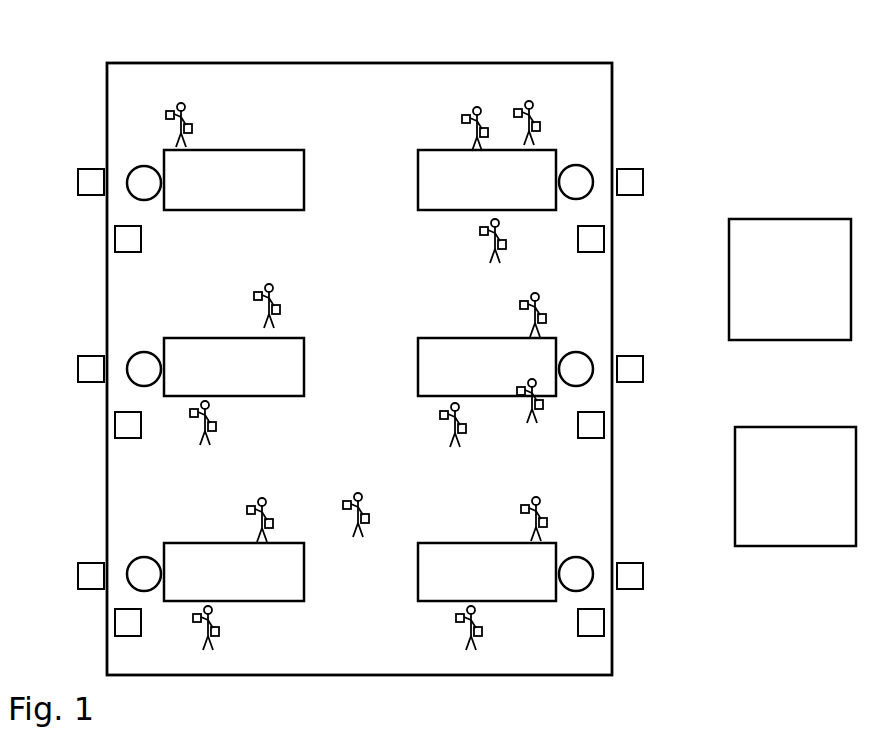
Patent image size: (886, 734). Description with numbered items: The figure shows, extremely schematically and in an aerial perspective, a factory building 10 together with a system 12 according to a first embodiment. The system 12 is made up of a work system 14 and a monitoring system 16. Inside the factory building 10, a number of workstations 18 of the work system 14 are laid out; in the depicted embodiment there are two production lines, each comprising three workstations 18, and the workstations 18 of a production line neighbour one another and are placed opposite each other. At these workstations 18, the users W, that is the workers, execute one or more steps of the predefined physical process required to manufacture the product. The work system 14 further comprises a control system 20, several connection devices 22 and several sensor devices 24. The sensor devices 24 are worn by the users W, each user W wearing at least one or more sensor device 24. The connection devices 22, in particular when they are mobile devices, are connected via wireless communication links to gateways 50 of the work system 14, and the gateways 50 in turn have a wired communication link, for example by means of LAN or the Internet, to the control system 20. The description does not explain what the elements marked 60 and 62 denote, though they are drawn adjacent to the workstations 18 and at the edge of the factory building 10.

The factory building 10 is at (563, 63).
The system 12 is at (88, 72).
The work system 14 is at (658, 80).
The monitoring system 16 is at (763, 219).
The workstation 18 is at (193, 560).
The control system 20 is at (797, 535).
The connection device 22 is at (193, 128).
The sensor device 24 is at (170, 114).
The gateway 50 is at (128, 622).
The machine 60 is at (145, 570).
The outer sensor / anchor 62 is at (90, 578).
The user W is at (204, 80).